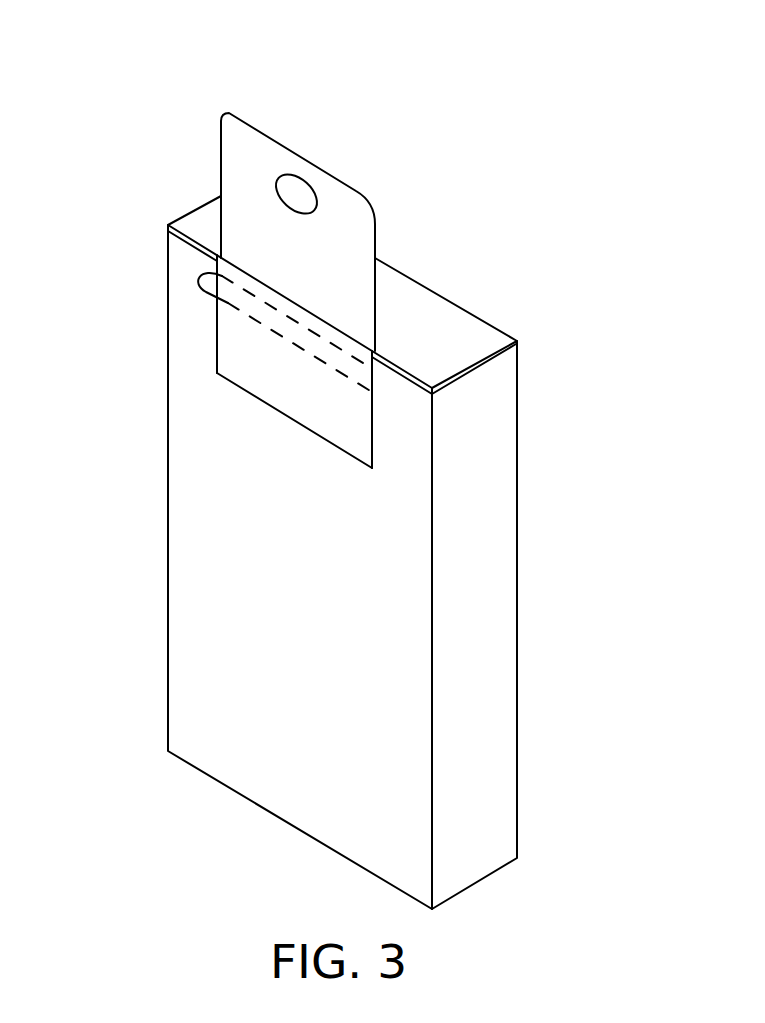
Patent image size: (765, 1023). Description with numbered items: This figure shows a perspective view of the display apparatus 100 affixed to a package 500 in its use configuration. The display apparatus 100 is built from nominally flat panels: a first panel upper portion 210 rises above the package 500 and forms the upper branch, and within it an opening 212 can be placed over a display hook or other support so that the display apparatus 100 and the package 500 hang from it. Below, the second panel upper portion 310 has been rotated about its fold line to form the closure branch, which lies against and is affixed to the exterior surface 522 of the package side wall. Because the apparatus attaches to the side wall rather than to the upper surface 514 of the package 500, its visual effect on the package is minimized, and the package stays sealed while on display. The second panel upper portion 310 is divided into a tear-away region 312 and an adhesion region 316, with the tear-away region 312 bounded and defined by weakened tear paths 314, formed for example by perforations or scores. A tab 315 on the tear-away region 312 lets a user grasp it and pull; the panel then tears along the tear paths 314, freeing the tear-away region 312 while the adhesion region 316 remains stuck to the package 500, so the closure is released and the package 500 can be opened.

The display apparatus 100 is at (287, 285).
The first panel upper portion 210 is at (326, 227).
The opening 212 is at (292, 190).
The second panel upper portion 310 is at (287, 402).
The tear-away region 312 is at (373, 372).
The tear paths 314 is at (285, 314).
The tab 315 is at (208, 274).
The adhesion region 316 is at (347, 440).
The package 500 is at (367, 552).
The upper surface 514 is at (453, 317).
The exterior surface 522 is at (185, 518).